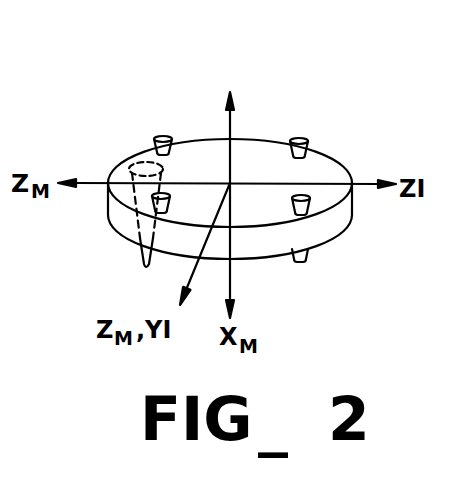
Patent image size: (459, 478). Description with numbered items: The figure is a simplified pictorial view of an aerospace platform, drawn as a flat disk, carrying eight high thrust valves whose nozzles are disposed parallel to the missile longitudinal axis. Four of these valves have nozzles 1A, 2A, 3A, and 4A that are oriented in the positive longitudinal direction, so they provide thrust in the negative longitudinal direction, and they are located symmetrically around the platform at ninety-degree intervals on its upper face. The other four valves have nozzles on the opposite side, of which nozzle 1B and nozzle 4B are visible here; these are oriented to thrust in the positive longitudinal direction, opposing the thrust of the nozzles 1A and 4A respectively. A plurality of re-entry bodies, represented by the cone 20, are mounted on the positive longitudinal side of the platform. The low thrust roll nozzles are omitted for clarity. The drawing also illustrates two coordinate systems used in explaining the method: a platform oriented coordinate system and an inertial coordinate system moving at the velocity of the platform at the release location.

The cone 20 is at (137, 249).
The nozzle 1A is at (157, 206).
The nozzle 1B is at (157, 265).
The nozzle 2A is at (157, 137).
The nozzle 3A is at (300, 138).
The nozzle 4A is at (300, 215).
The nozzle 4B is at (308, 262).